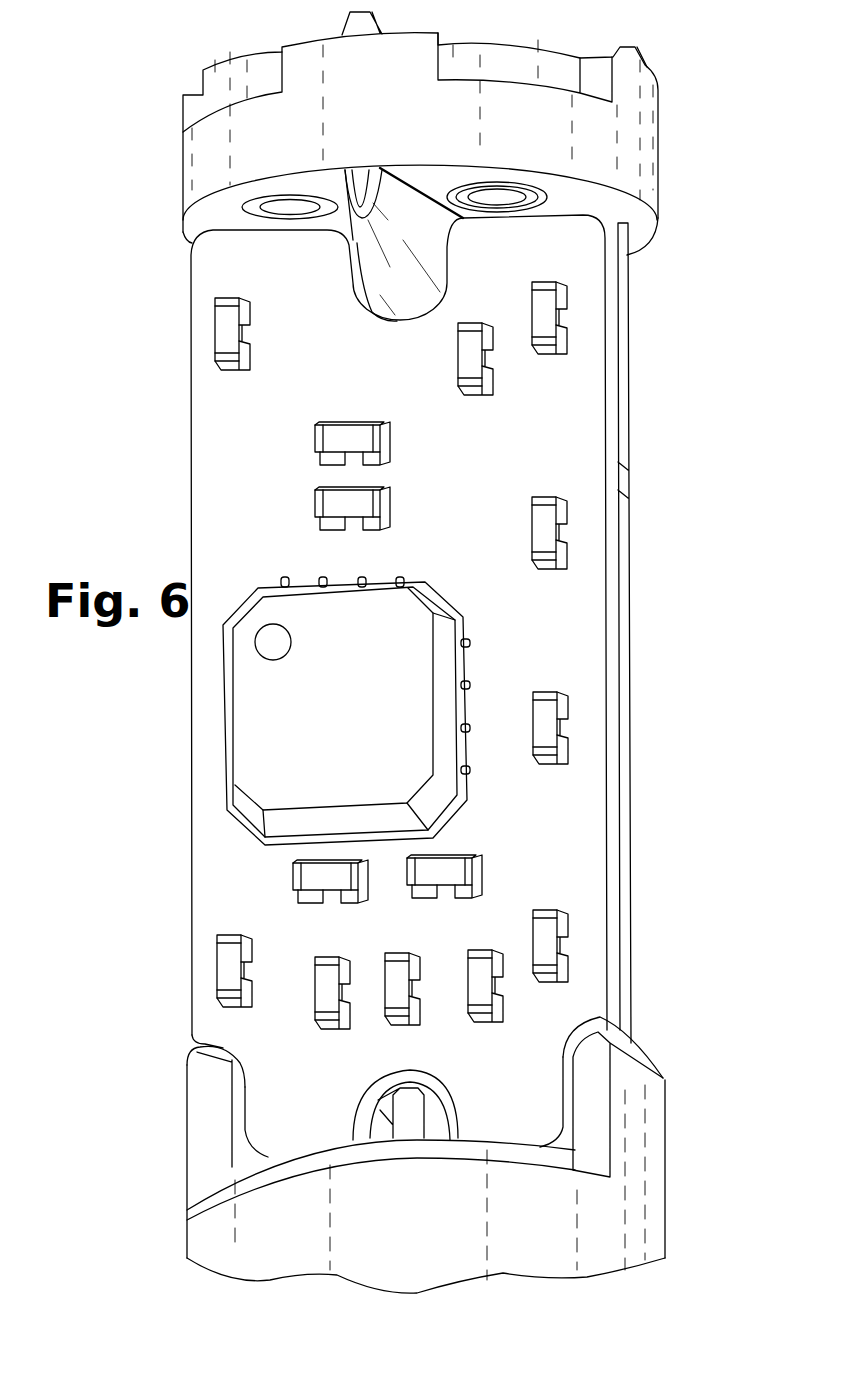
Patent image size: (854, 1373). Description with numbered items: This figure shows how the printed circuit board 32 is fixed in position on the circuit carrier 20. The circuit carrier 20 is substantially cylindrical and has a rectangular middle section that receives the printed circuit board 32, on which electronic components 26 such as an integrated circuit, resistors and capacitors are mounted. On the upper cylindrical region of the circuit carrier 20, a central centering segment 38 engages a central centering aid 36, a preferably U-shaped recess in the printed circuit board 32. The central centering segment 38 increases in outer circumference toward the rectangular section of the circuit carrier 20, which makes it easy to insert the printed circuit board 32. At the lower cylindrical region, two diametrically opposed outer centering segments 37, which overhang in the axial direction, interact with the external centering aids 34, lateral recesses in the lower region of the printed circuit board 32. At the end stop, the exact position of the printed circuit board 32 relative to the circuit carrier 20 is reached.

The circuit carrier 20 is at (223, 1225).
The electronic components 26 is at (298, 717).
The printed circuit board 32 is at (253, 497).
The external centering aids 34 is at (205, 1048).
The central centering aid 36 is at (428, 310).
The centering segments 37 is at (207, 1135).
The central centering segment 38 is at (425, 235).